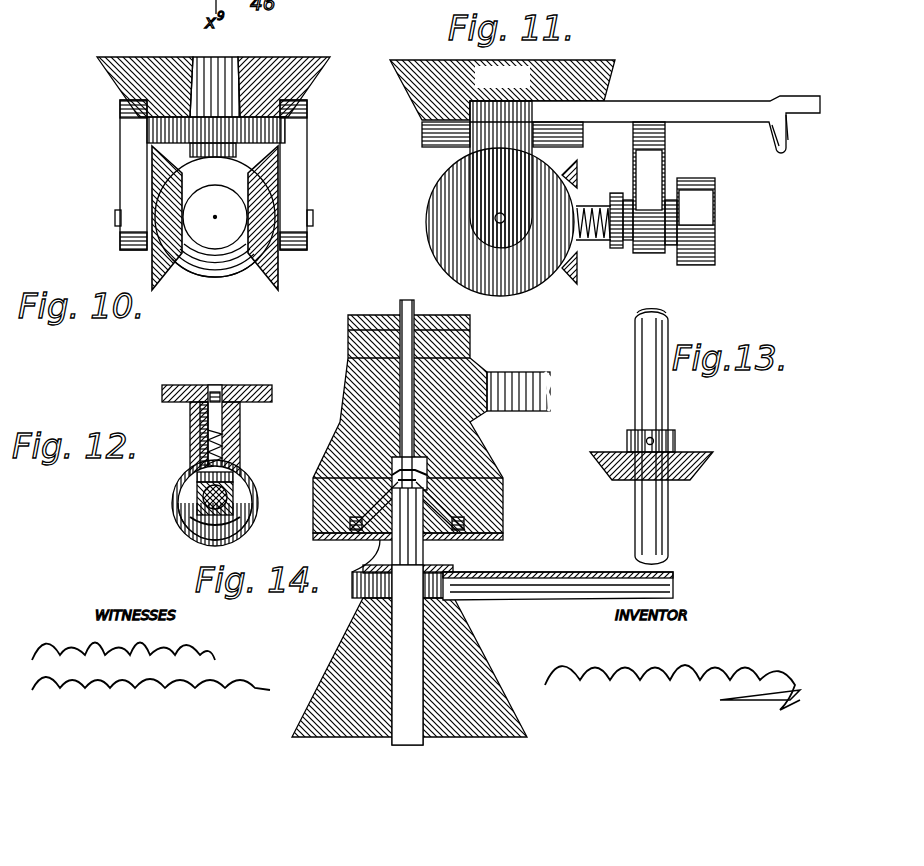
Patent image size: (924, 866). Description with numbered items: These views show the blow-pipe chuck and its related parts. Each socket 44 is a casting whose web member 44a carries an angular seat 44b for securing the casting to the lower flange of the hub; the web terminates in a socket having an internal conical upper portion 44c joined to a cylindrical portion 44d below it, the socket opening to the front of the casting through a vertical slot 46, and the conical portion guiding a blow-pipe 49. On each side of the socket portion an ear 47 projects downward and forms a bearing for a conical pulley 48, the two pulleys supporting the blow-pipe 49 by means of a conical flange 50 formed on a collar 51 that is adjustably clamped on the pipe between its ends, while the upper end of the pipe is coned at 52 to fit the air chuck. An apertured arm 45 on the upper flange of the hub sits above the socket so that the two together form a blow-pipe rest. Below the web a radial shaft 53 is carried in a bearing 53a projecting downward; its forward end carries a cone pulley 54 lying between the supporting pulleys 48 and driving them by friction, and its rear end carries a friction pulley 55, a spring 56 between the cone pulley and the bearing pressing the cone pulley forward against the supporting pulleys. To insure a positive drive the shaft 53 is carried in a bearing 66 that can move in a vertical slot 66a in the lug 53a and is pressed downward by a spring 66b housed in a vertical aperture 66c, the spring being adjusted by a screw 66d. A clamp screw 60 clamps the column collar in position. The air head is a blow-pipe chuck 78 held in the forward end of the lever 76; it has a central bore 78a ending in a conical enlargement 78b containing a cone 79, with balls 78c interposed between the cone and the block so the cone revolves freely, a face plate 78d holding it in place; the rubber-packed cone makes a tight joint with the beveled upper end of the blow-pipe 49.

In FIG. 10, the socket 44 is at (292, 120).
In FIG. 11, the socket 44 is at (502, 77).
In FIG. 11, the web member 44a is at (700, 104).
In FIG. 12, the web member 44a is at (255, 384).
In FIG. 11, the angular seat 44b is at (793, 145).
In FIG. 10, the internal conical upper portion 44c is at (316, 80).
In FIG. 11, the internal conical upper portion 44c is at (606, 72).
In FIG. 10, the cylindrical portion 44d is at (160, 130).
In FIG. 11, the cylindrical portion 44d is at (432, 132).
In FIG. 14, the arm 45 is at (566, 590).
In FIG. 10, the vertical slot 46 is at (238, 64).
In FIG. 10, the ear 47 is at (132, 183).
In FIG. 11, the ear 47 is at (482, 160).
In FIG. 10, the conical pulley 48 is at (282, 262).
In FIG. 11, the conical pulley 48 is at (440, 250).
In FIG. 13, the blow-pipe 49 is at (640, 394).
In FIG. 14, the blow-pipe 49 is at (424, 688).
In FIG. 13, the conical flange 50 is at (708, 462).
In FIG. 13, the collar 51 is at (676, 438).
In FIG. 14, the coned upper end 52 is at (420, 482).
In FIG. 11, the radial shaft 53 is at (600, 248).
In FIG. 12, the radial shaft 53 is at (234, 500).
In FIG. 11, the bearing 53a is at (658, 160).
In FIG. 12, the bearing 53a is at (198, 530).
In FIG. 10, the cone pulley 54 is at (218, 276).
In FIG. 11, the cone pulley 54 is at (575, 172).
In FIG. 11, the friction pulley 55 is at (704, 193).
In FIG. 12, the friction pulley 55 is at (182, 503).
In FIG. 11, the spring 56 is at (582, 208).
In FIG. 14, the clamp screw 60 is at (472, 664).
In FIG. 11, the bearing 66 is at (626, 246).
In FIG. 12, the bearing 66 is at (247, 482).
In FIG. 12, the vertical slot 66a is at (246, 466).
In FIG. 12, the spring 66b is at (242, 442).
In FIG. 12, the vertical aperture 66c is at (192, 455).
In FIG. 12, the screw 66d is at (212, 384).
In FIG. 14, the lever 76 is at (508, 384).
In FIG. 14, the blow-pipe chuck 78 is at (495, 497).
In FIG. 14, the central bore 78a is at (406, 382).
In FIG. 14, the conical enlargement 78b is at (392, 486).
In FIG. 14, the balls 78c is at (468, 522).
In FIG. 14, the face plate 78d is at (346, 538).
In FIG. 14, the cone 79 is at (465, 540).